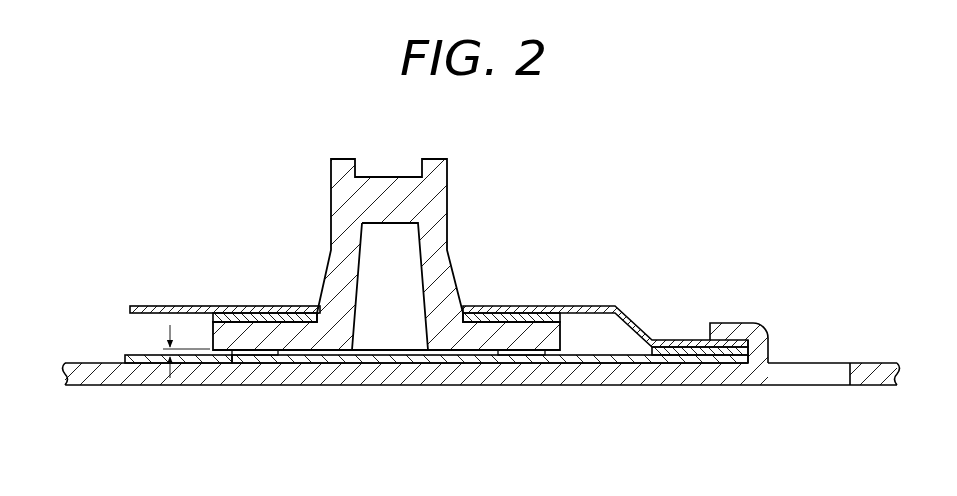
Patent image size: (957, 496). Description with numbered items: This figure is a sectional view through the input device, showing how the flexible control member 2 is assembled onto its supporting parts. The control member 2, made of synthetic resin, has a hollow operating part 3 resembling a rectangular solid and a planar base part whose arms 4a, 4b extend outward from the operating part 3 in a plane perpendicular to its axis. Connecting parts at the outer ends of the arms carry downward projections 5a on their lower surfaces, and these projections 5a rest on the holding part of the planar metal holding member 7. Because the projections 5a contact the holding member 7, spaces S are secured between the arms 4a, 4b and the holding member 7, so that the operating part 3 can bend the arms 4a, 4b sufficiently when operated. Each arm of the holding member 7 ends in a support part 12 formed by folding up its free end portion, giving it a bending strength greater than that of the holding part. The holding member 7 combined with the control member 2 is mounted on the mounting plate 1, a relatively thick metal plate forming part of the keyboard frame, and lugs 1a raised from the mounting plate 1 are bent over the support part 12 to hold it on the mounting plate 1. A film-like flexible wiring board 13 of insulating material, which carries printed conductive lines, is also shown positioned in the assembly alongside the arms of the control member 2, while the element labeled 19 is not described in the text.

The mounting plate 1 is at (107, 386).
The lugs 1a is at (735, 323).
The control member 2 is at (452, 166).
The operating part 3 is at (437, 227).
The arm 4a is at (293, 318).
The arm 4b is at (515, 320).
The downward projections 5a is at (245, 356).
The holding member 7 is at (124, 346).
The support part 12 is at (692, 345).
The flexible wiring board 13 is at (240, 310).
The bent plate 19 is at (585, 306).
The spaces S is at (180, 348).